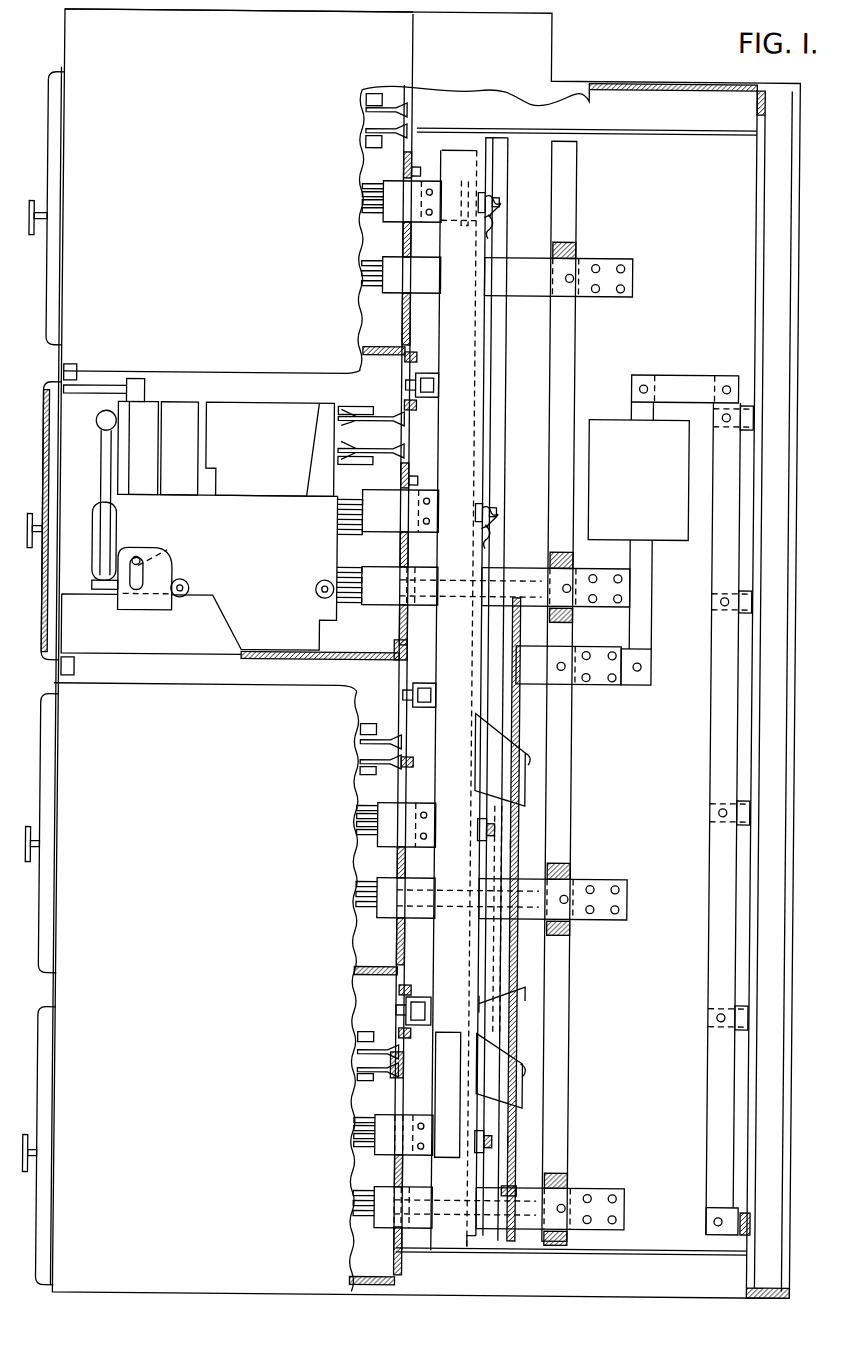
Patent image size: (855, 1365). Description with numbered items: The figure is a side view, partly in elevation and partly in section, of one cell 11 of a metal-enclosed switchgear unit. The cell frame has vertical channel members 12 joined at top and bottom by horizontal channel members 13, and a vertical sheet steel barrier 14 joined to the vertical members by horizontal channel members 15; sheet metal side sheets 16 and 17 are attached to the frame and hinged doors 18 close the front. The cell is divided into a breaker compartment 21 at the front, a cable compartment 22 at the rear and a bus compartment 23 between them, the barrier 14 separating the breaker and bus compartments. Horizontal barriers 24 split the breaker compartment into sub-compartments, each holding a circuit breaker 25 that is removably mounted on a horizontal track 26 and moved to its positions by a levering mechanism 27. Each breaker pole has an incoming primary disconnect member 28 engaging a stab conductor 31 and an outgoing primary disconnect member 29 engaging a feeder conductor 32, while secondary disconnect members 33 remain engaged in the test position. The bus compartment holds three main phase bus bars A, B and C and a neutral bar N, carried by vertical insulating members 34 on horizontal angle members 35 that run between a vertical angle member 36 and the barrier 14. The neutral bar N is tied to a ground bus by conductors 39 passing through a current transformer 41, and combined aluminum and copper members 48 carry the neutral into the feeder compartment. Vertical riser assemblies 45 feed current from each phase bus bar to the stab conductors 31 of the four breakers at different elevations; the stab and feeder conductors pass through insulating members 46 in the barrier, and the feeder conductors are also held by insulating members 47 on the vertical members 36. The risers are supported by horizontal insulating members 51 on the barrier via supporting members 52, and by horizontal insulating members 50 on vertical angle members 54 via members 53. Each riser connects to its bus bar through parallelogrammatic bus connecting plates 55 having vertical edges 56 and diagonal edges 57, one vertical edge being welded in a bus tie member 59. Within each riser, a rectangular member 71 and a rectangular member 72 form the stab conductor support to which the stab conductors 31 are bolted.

The cell 11 is at (48, 61).
The vertical channel member 12 is at (790, 1216).
The horizontal channel member 13 is at (774, 84).
The vertical sheet steel barrier 14 is at (405, 657).
The horizontal channel member 15 is at (626, 100).
The side sheet 16 is at (68, 34).
The side sheet 17 is at (545, 56).
The hinged door 18 is at (48, 155).
The breaker compartment 21 is at (389, 383).
The cable compartment 22 is at (712, 246).
The bus compartment 23 is at (534, 386).
The horizontal barrier 24 is at (370, 352).
The circuit breaker 25 is at (276, 545).
The horizontal track 26 is at (78, 597).
The levering mechanism 27 is at (146, 553).
The incoming primary disconnect member 28 is at (368, 500).
The outgoing primary disconnect member 29 is at (372, 570).
The stab conductor 31 is at (392, 214).
The feeder conductor 32 is at (390, 290).
The secondary disconnect member 33 is at (394, 422).
The vertical insulating member 34 is at (520, 1186).
The horizontal angle member 35 is at (453, 1194).
The vertical angle member 36 is at (576, 976).
The conductor 39 is at (708, 372).
The current transformer 41 is at (612, 420).
The vertical riser assembly 45 is at (470, 431).
The insulating member 46 is at (403, 168).
The insulating member 47 is at (580, 246).
The combined aluminum and copper member 48 is at (520, 698).
The horizontal insulating member 50 is at (500, 194).
The horizontal insulating member 51 is at (421, 368).
The supporting member 52 is at (446, 386).
The member 53 is at (494, 225).
The vertical angle member 54 is at (494, 440).
The bus connecting plate 55 is at (522, 733).
The vertical edge 56 is at (532, 757).
The diagonal edge 57 is at (490, 1003).
The bus tie member 59 is at (483, 1028).
The rectangular member 71 is at (468, 178).
The rectangular member 72 is at (458, 225).
The neutral bar N is at (518, 640).
The main phase bus bar A is at (519, 844).
The main phase bus bar B is at (522, 932).
The main phase bus bar C is at (520, 1140).